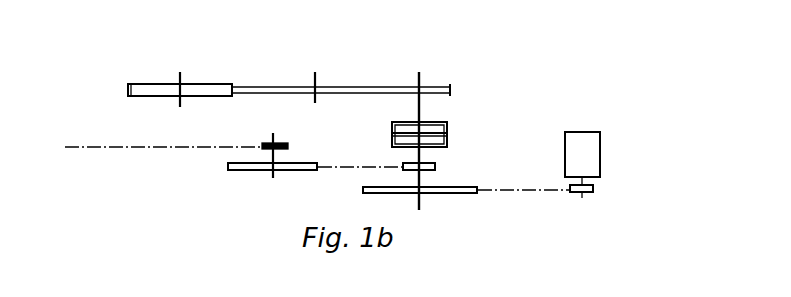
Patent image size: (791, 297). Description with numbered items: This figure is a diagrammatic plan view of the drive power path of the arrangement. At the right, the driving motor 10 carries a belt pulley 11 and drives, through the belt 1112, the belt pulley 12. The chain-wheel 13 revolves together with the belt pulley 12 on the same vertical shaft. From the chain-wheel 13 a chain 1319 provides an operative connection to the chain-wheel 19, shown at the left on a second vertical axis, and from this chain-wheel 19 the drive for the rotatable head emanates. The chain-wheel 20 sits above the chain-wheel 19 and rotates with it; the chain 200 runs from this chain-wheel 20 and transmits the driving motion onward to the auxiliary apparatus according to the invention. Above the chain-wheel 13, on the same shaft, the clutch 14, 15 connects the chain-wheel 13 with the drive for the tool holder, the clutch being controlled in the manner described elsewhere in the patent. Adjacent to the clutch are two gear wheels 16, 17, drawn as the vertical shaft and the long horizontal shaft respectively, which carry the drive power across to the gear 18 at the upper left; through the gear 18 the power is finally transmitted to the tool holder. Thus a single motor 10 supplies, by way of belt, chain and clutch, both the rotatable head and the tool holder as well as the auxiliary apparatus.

The driving motor 10 is at (592, 146).
The belt pulley 11 is at (588, 194).
The belt pulley 12 is at (452, 195).
The chain-wheel 13 is at (436, 167).
The clutch 14 is at (448, 124).
The clutch 15 is at (448, 140).
The gear wheel 16 is at (446, 86).
The gear wheel 17 is at (341, 87).
The gear 18 is at (196, 88).
The chain-wheel 19 is at (250, 172).
The chain-wheel 20 is at (289, 146).
The chain 200 is at (121, 150).
The belt 1112 is at (522, 193).
The chain 1319 is at (340, 169).